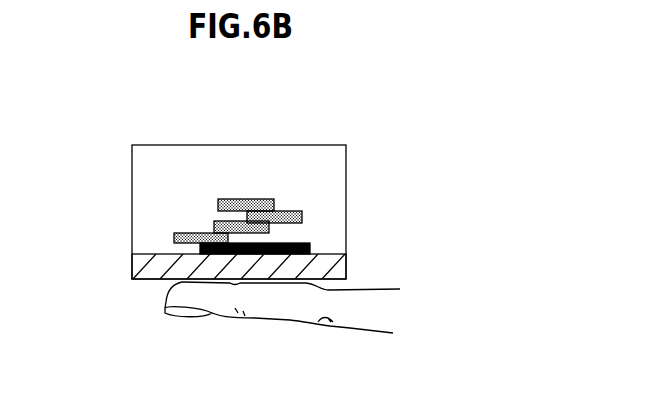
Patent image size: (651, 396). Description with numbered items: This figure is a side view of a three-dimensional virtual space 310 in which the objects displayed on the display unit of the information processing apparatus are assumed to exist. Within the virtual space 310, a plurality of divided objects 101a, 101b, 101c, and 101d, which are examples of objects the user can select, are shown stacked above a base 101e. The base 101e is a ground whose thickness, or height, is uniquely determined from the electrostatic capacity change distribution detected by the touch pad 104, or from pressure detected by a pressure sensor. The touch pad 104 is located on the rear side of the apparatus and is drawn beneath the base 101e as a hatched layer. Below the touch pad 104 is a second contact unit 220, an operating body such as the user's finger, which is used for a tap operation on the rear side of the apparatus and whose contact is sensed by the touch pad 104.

The three-dimensional virtual space 310 is at (285, 145).
The touch pad 104 is at (132, 265).
The divided object 101a is at (267, 197).
The divided object 101b is at (302, 213).
The divided object 101c is at (174, 234).
The divided object 101d is at (214, 222).
The base 101e is at (309, 246).
The second contact unit 220 is at (283, 320).